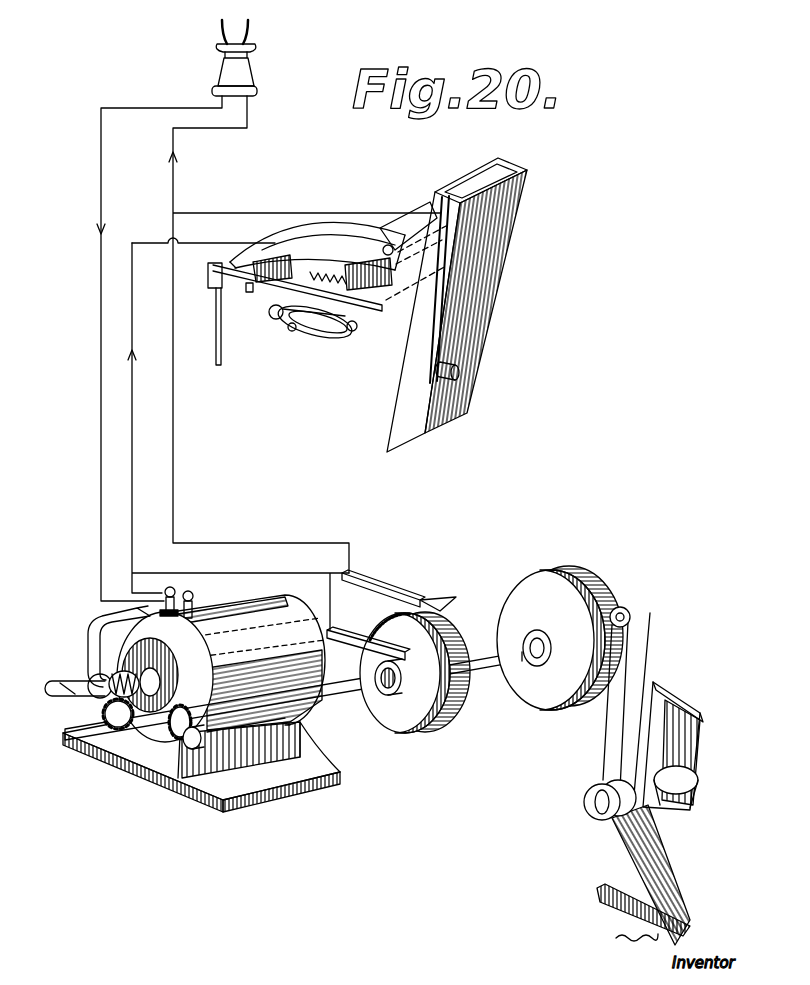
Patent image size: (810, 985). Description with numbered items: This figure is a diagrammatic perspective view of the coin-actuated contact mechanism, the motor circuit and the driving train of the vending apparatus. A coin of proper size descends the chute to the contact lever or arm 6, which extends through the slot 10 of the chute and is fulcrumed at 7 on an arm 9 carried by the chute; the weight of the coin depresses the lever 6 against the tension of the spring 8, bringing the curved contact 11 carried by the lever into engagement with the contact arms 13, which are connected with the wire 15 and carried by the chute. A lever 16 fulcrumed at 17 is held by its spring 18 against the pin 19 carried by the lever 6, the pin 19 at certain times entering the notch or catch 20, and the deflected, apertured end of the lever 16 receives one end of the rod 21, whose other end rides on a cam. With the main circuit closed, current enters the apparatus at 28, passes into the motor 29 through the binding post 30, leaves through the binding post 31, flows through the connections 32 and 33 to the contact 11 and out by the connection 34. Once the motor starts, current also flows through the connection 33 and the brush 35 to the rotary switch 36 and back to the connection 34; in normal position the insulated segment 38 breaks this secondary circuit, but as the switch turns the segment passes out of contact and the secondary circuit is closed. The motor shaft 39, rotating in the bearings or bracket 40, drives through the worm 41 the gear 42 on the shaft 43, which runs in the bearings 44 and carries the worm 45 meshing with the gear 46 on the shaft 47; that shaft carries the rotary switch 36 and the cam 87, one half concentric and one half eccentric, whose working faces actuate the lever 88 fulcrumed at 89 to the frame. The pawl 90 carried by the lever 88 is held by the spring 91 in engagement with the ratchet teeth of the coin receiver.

The current entry point 28 is at (224, 27).
The connection 34 is at (260, 13).
The connection 33 is at (199, 243).
The connection 32 is at (128, 425).
The contact 11 is at (272, 243).
The contact arms 13 is at (371, 236).
The notch or catch 20 is at (240, 261).
The rod 21 is at (216, 353).
The lever 16 is at (228, 282).
The pin 19 is at (250, 293).
The fulcrum 7 is at (274, 318).
The spring 8 is at (292, 331).
The arm 9 is at (322, 331).
The spring 18 is at (340, 333).
The fulcrum 17 is at (352, 332).
The wire 15 is at (527, 172).
The slot 10 is at (436, 437).
The contact lever or arm 6 is at (460, 371).
The binding post 31 is at (171, 596).
The binding post 30 is at (197, 604).
The motor 29 is at (221, 668).
The shaft 43 is at (198, 748).
The shaft 47 is at (66, 741).
The gear 42 is at (116, 728).
The gear 46 is at (182, 708).
The worm 45 is at (188, 748).
The bearings or bracket 40 is at (98, 623).
The worm 41 is at (92, 672).
The bearings 44 is at (60, 668).
The motor shaft 39 is at (82, 700).
The rotary switch 36 is at (430, 726).
The brush 35 is at (347, 638).
The insulated segment 38 is at (393, 614).
The cam 87 is at (590, 600).
The lever 88 is at (645, 655).
The fulcrum 89 is at (598, 800).
The pawl 90 is at (622, 910).
The spring 91 is at (630, 942).